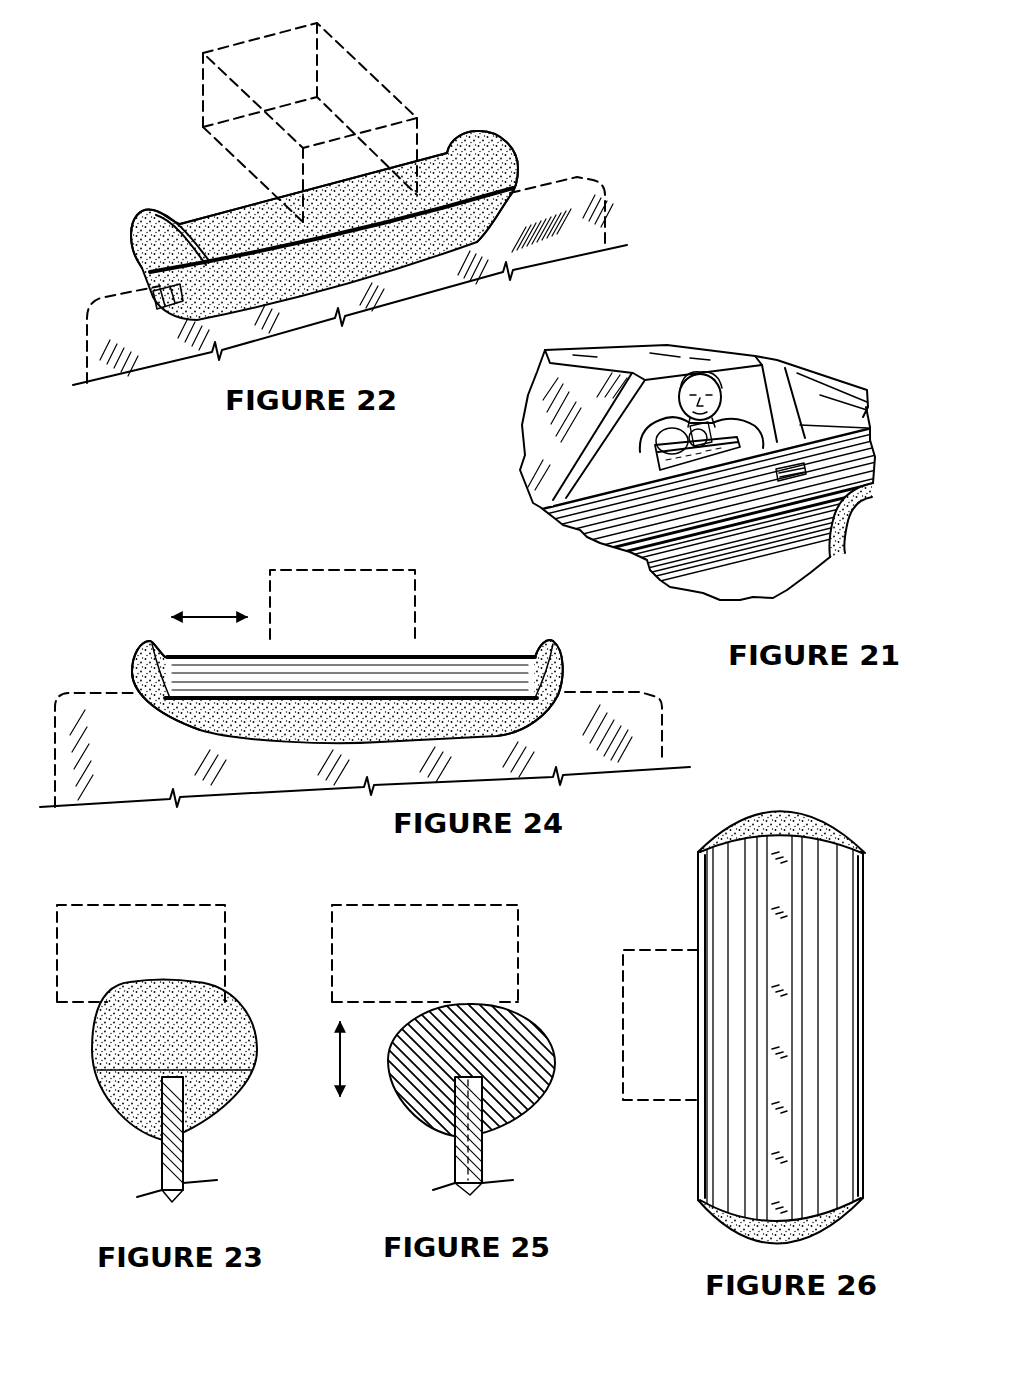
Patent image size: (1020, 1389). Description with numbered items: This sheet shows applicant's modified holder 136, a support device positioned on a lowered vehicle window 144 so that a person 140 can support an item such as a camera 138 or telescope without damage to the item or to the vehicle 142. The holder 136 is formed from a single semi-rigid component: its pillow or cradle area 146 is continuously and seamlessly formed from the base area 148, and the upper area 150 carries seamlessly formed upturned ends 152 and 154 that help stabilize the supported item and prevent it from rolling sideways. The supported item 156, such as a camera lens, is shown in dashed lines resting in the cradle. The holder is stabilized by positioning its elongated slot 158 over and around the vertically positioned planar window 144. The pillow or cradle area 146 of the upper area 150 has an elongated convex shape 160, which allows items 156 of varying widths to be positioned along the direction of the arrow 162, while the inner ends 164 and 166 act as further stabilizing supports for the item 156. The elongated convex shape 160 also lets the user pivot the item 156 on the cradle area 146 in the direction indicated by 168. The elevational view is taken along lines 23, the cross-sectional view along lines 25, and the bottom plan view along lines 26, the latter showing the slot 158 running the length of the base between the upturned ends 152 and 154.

In FIG. 22, the modified holder 136 is at (533, 93).
In FIG. 21, the modified holder 136 is at (672, 502).
In FIG. 21, the camera 138 is at (742, 403).
In FIG. 21, the person 140 is at (694, 372).
In FIG. 21, the vehicle 142 is at (748, 355).
In FIG. 22, the vehicle window 144 is at (432, 296).
In FIG. 21, the vehicle window 144 is at (650, 462).
In FIG. 24, the vehicle window 144 is at (365, 749).
In FIG. 23, the vehicle window 144 is at (172, 1160).
In FIG. 25, the vehicle window 144 is at (443, 1160).
In FIG. 22, the pillow or cradle area 146 is at (268, 246).
In FIG. 24, the pillow or cradle area 146 is at (450, 655).
In FIG. 22, the base area 148 is at (317, 273).
In FIG. 24, the base area 148 is at (365, 734).
In FIG. 22, the upper area 150 is at (207, 208).
In FIG. 23, the upper area 150 is at (92, 1052).
In FIG. 25, the upper area 150 is at (542, 1047).
In FIG. 22, the upturned end 152 is at (137, 235).
In FIG. 24, the upturned end 152 is at (125, 672).
In FIG. 23, the upturned end 152 is at (200, 1045).
In FIG. 26, the upturned end 152 is at (800, 812).
In FIG. 22, the upturned end 154 is at (504, 150).
In FIG. 24, the upturned end 154 is at (562, 668).
In FIG. 26, the upturned end 154 is at (730, 1238).
In FIG. 22, the item 156 is at (347, 52).
In FIG. 24, the item 156 is at (417, 592).
In FIG. 23, the item 156 is at (110, 902).
In FIG. 25, the item 156 is at (462, 900).
In FIG. 26, the item 156 is at (658, 1102).
In FIG. 22, the elongated slot 158 is at (167, 300).
In FIG. 23, the elongated slot 158 is at (182, 1113).
In FIG. 25, the elongated slot 158 is at (450, 1107).
In FIG. 26, the elongated slot 158 is at (768, 937).
In FIG. 24, the elongated convex shape 160 is at (238, 683).
In FIG. 25, the elongated convex shape 160 is at (537, 1047).
In FIG. 24, the arrow 162 is at (222, 614).
In FIG. 24, the inner end 164 is at (152, 640).
In FIG. 24, the inner end 166 is at (550, 648).
In FIG. 25, the pivot direction 168 is at (337, 1055).
In FIG. 22, the section lines 23— 23 is at (67, 210).
In FIG. 24, the section lines 25— 25 is at (235, 557).
In FIG. 23, the section lines 26— 26 is at (102, 1217).